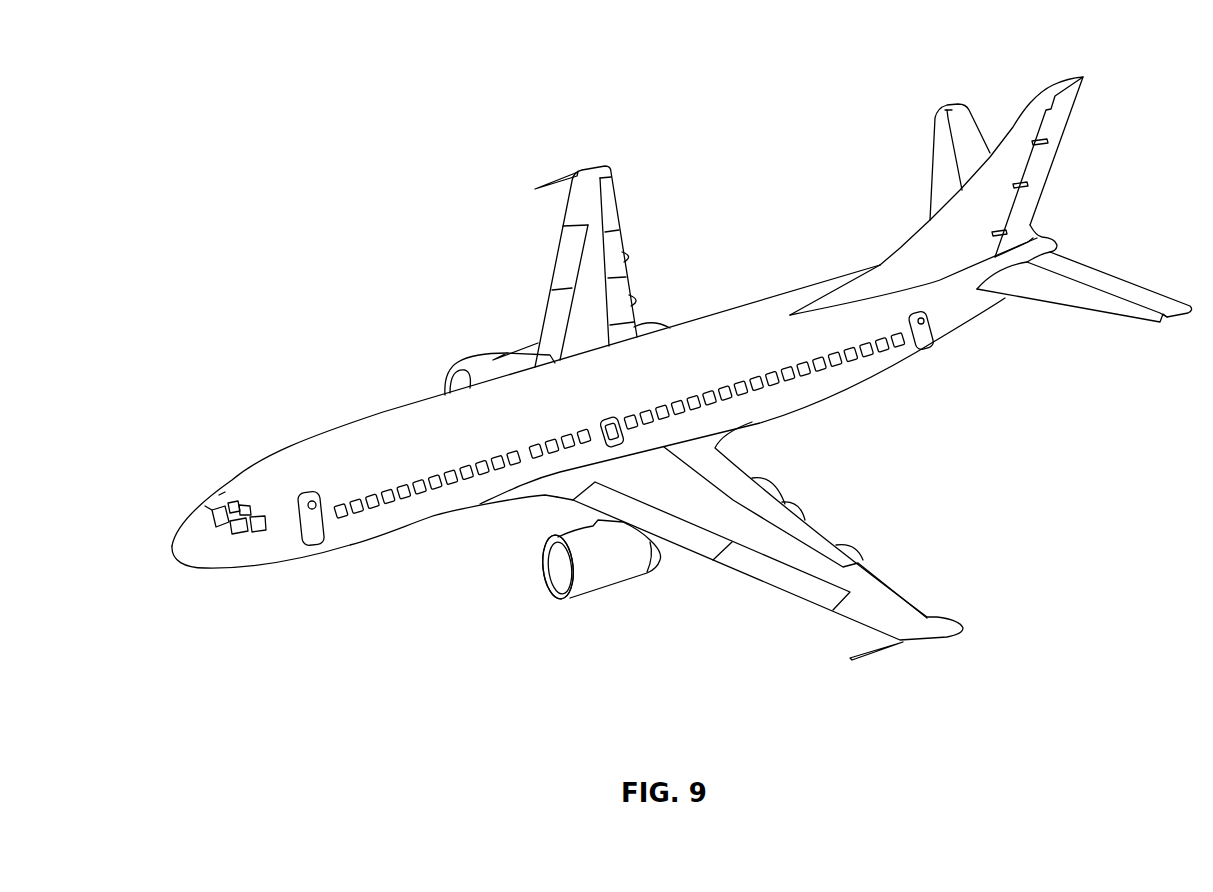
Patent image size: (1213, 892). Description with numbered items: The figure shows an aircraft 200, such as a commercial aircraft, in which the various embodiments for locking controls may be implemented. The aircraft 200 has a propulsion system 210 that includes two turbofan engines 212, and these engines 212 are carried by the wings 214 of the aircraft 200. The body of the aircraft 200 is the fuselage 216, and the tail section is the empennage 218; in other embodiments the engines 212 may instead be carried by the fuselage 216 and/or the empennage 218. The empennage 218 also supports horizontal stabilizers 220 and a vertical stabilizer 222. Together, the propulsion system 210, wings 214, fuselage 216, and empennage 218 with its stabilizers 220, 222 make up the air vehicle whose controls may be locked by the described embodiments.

The aircraft 200 is at (356, 114).
The propulsion system 210 is at (538, 577).
The turbofan engines 212 is at (480, 366).
The wings 214 is at (588, 180).
The fuselage 216 is at (378, 527).
The empennage 218 is at (792, 286).
The horizontal stabilizers 220 is at (958, 112).
The vertical stabilizer 222 is at (1038, 102).